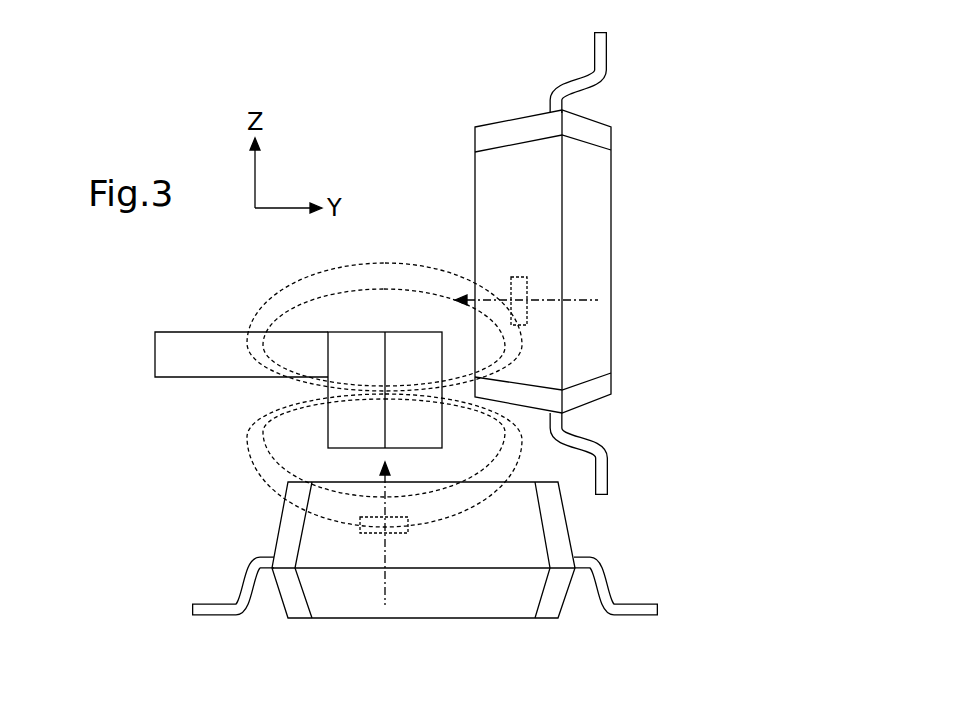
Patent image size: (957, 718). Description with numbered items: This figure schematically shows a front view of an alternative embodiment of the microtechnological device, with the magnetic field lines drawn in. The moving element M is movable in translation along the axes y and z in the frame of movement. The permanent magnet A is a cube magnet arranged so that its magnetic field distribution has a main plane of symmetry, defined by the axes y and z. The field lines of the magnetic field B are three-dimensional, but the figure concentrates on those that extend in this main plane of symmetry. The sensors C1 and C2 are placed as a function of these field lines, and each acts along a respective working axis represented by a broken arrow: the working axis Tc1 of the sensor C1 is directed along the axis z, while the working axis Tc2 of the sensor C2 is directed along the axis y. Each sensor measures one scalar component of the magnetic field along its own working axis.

The moving element M is at (172, 345).
The permanent magnet A is at (338, 423).
The magnetic field B is at (378, 290).
The sensor C1 is at (462, 603).
The sensor C2 is at (552, 190).
The working axis Tc1 is at (382, 591).
The working axis Tc2 is at (583, 300).